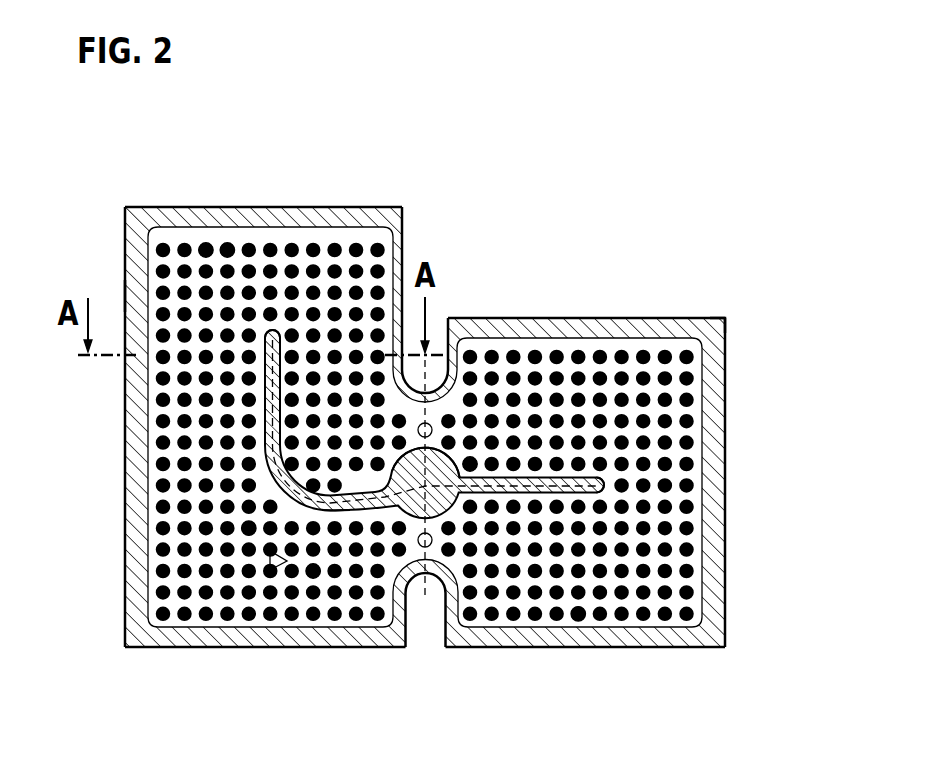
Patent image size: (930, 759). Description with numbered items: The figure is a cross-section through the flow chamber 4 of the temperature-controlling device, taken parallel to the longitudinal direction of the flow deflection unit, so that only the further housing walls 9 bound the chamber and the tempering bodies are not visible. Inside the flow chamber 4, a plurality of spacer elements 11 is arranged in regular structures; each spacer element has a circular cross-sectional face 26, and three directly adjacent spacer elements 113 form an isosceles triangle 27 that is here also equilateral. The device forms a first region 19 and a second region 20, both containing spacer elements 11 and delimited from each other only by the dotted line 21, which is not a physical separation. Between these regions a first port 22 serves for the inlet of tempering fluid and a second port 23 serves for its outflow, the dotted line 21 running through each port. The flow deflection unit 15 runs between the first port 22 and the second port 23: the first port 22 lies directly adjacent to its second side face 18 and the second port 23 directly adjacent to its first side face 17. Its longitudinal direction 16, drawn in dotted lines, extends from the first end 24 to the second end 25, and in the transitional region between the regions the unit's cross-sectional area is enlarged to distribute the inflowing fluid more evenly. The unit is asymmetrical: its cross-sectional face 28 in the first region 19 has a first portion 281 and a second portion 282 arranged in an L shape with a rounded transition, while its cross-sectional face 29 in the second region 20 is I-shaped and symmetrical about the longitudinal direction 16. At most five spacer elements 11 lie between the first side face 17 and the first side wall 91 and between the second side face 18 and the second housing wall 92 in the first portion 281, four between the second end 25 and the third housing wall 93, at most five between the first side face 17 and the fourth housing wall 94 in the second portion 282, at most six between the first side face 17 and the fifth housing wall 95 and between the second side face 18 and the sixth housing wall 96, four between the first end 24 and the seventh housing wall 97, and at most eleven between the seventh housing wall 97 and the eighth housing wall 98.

The flow chamber 4 is at (352, 237).
The housing walls 9 is at (118, 293).
The spacer elements 11 is at (184, 243).
The flow deflection unit 15 is at (457, 472).
The longitudinal direction 16 is at (263, 433).
The first side face 17 is at (263, 406).
The second side face 18 is at (277, 388).
The first region 19 is at (258, 518).
The second region 20 is at (570, 600).
The dotted line 21 is at (423, 603).
The first port 22 is at (432, 426).
The second port 23 is at (427, 548).
The first end 24 is at (598, 483).
The second end 25 is at (227, 243).
The cross-sectional face 26 is at (205, 243).
The isosceles triangle 27 is at (290, 560).
The cross-sectional face 28 is at (262, 485).
The cross-sectional face 29 is at (550, 470).
The first side wall 91 is at (138, 252).
The second housing wall 92 is at (400, 285).
The third housing wall 93 is at (233, 218).
The fourth housing wall 94 is at (172, 638).
The fifth housing wall 95 is at (496, 638).
The sixth housing wall 96 is at (641, 328).
The seventh housing wall 97 is at (713, 518).
The eighth housing wall 98 is at (450, 352).
The directly adjacent spacer elements 113 is at (248, 552).
The first portion 281 is at (282, 343).
The second portion 282 is at (340, 521).